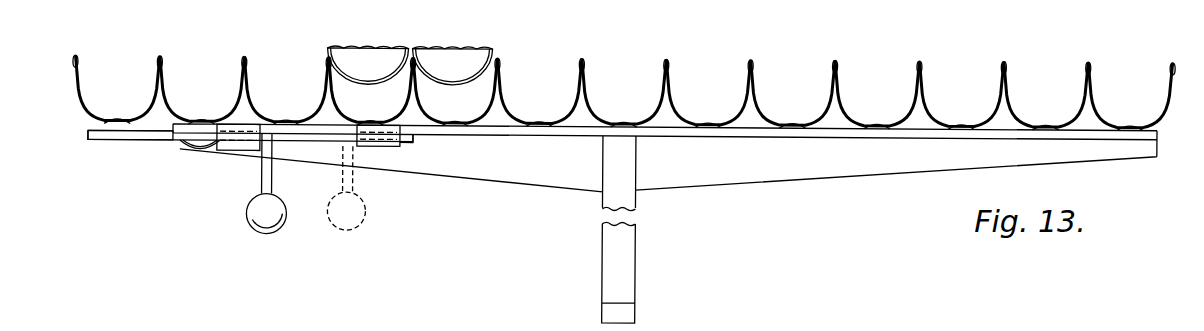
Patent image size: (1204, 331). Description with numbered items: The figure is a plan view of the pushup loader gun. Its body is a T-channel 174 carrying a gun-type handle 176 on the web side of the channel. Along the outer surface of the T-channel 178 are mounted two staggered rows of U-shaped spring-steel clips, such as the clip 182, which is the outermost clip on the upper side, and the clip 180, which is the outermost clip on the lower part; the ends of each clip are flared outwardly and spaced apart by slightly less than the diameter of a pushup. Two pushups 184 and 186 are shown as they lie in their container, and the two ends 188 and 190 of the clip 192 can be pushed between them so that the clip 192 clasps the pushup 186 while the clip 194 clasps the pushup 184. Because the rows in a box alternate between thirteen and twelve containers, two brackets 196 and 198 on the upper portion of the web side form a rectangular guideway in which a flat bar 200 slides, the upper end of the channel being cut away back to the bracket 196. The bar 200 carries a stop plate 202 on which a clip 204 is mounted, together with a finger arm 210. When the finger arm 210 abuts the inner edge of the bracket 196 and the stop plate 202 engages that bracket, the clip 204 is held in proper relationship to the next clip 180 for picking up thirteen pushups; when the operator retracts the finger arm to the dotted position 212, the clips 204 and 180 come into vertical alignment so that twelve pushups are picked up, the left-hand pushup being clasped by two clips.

The T-channel 174 is at (846, 173).
The gun-type handle 176 is at (637, 250).
The T-channel 178 is at (178, 151).
The U-shaped clip 180 is at (235, 107).
The U-shaped clip 182 is at (258, 107).
The pushup 184 is at (379, 86).
The pushup 186 is at (458, 88).
The clip end 188 is at (417, 68).
The clip end 190 is at (499, 66).
The clip 192 is at (425, 129).
The clip 194 is at (341, 118).
The bracket 196 is at (236, 152).
The bracket 198 is at (401, 150).
The flat bar 200 is at (152, 137).
The stop plate 202 is at (103, 135).
The clip 204 is at (96, 108).
The finger arm 210 is at (262, 182).
The dotted position 212 is at (366, 189).